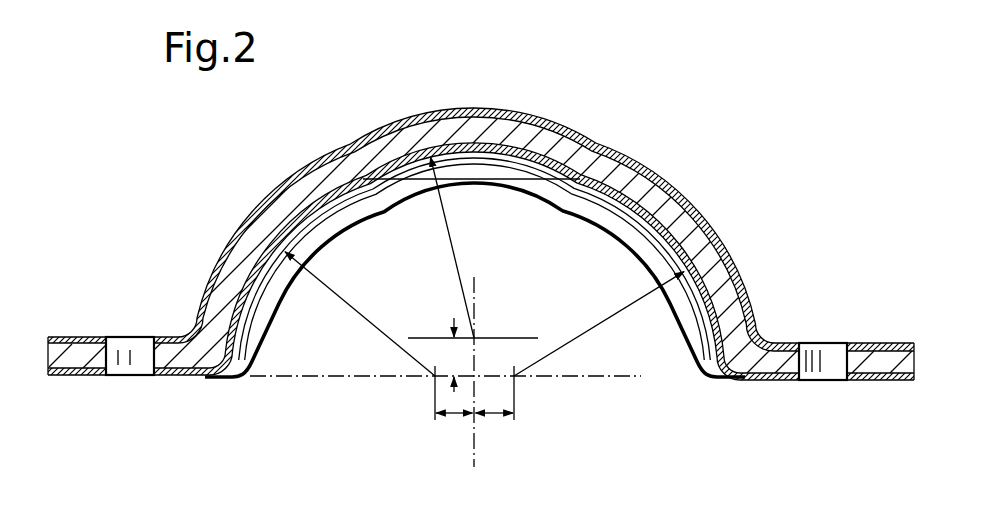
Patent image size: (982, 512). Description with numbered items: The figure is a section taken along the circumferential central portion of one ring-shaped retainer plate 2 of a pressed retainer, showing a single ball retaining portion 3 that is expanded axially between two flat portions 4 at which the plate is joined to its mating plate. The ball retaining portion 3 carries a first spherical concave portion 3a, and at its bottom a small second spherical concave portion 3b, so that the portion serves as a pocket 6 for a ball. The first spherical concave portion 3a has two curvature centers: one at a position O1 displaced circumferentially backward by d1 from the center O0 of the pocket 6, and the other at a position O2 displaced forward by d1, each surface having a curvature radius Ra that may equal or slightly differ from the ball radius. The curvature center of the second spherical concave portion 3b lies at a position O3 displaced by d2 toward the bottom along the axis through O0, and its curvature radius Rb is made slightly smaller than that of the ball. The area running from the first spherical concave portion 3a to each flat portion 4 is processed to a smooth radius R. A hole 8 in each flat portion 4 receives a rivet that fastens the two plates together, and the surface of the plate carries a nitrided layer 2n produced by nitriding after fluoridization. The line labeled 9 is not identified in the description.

The ring-shaped retainer plate 2 is at (643, 88).
The nitrided layer 2n is at (352, 147).
The ball retaining portion 3 is at (644, 162).
The first spherical concave portion 3a is at (299, 213).
The second spherical concave portion 3b is at (495, 156).
The flat portion 4 is at (80, 350).
The pocket 6 is at (690, 313).
The hole 8 is at (832, 357).
The apex tangent line 9 is at (580, 179).
The smooth radius R is at (192, 330).
The curvature radius of the first spherical concave portion Ra is at (484, 314).
The curvature radius of the second spherical concave portion Rb is at (455, 247).
The center of the pocket O0 is at (497, 361).
The curvature center O1 is at (434, 378).
The curvature center O2 is at (516, 378).
The curvature center of the second spherical concave portion O3 is at (478, 333).
The circumferential displacement d1 is at (475, 433).
The axial displacement d2 is at (453, 355).